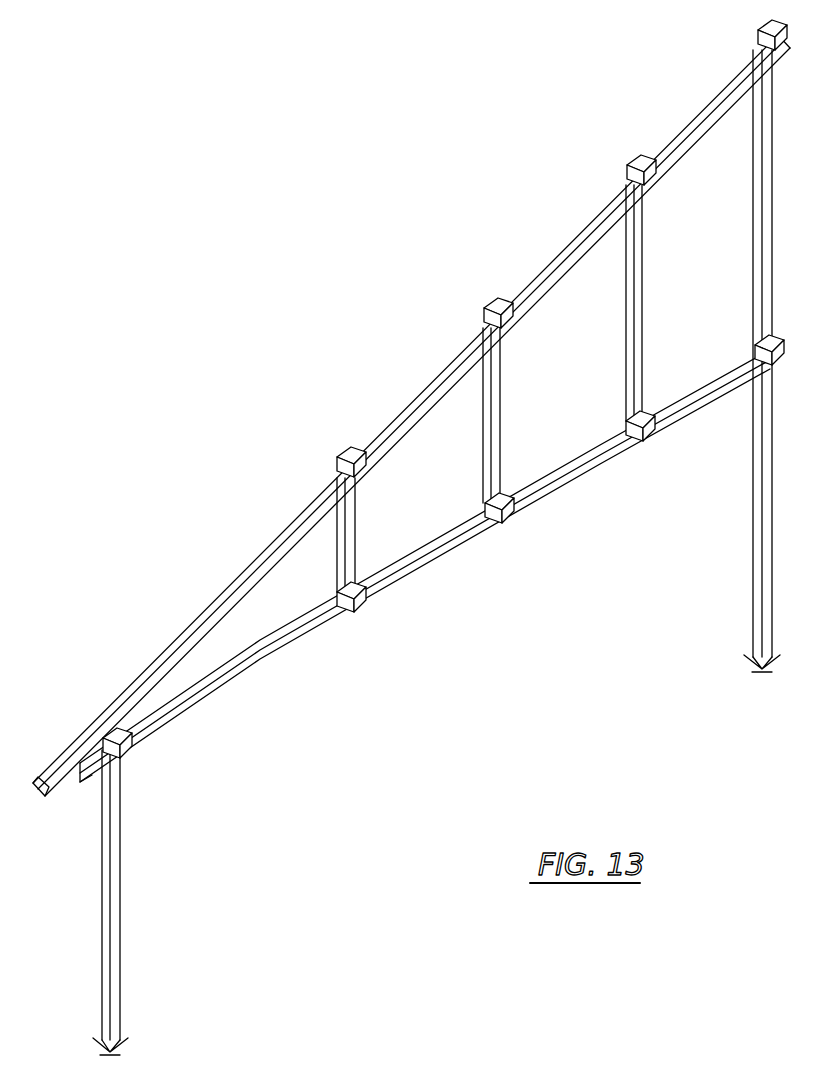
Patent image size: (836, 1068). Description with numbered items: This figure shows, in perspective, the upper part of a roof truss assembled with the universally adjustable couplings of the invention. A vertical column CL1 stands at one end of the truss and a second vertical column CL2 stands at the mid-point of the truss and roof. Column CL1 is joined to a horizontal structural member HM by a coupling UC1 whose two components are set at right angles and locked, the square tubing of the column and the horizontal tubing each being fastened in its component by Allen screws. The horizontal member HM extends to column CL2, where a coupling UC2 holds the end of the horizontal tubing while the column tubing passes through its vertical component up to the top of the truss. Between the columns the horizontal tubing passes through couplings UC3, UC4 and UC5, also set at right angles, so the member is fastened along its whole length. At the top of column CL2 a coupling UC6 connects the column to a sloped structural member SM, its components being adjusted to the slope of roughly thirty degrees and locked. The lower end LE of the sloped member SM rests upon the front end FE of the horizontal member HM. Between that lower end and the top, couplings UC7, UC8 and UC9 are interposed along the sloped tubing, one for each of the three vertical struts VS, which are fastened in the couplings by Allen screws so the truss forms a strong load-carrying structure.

The universally adjustable coupling UC1 is at (135, 750).
The adjustable coupling UC2 is at (754, 345).
The adjustable coupling UC3 is at (360, 615).
The adjustable coupling UC4 is at (505, 525).
The adjustable coupling UC5 is at (650, 440).
The adjustable coupling UC6 is at (757, 35).
The adjustable coupling UC7 is at (627, 162).
The adjustable coupling UC8 is at (484, 308).
The adjustable coupling UC9 is at (338, 458).
The sloped structural member SM is at (718, 90).
The horizontal structural member HM is at (687, 411).
The vertical strut VS is at (625, 338).
The vertical column CL1 is at (118, 972).
The vertical column CL2 is at (754, 225).
The lower end LE is at (62, 757).
The front end FE is at (92, 772).